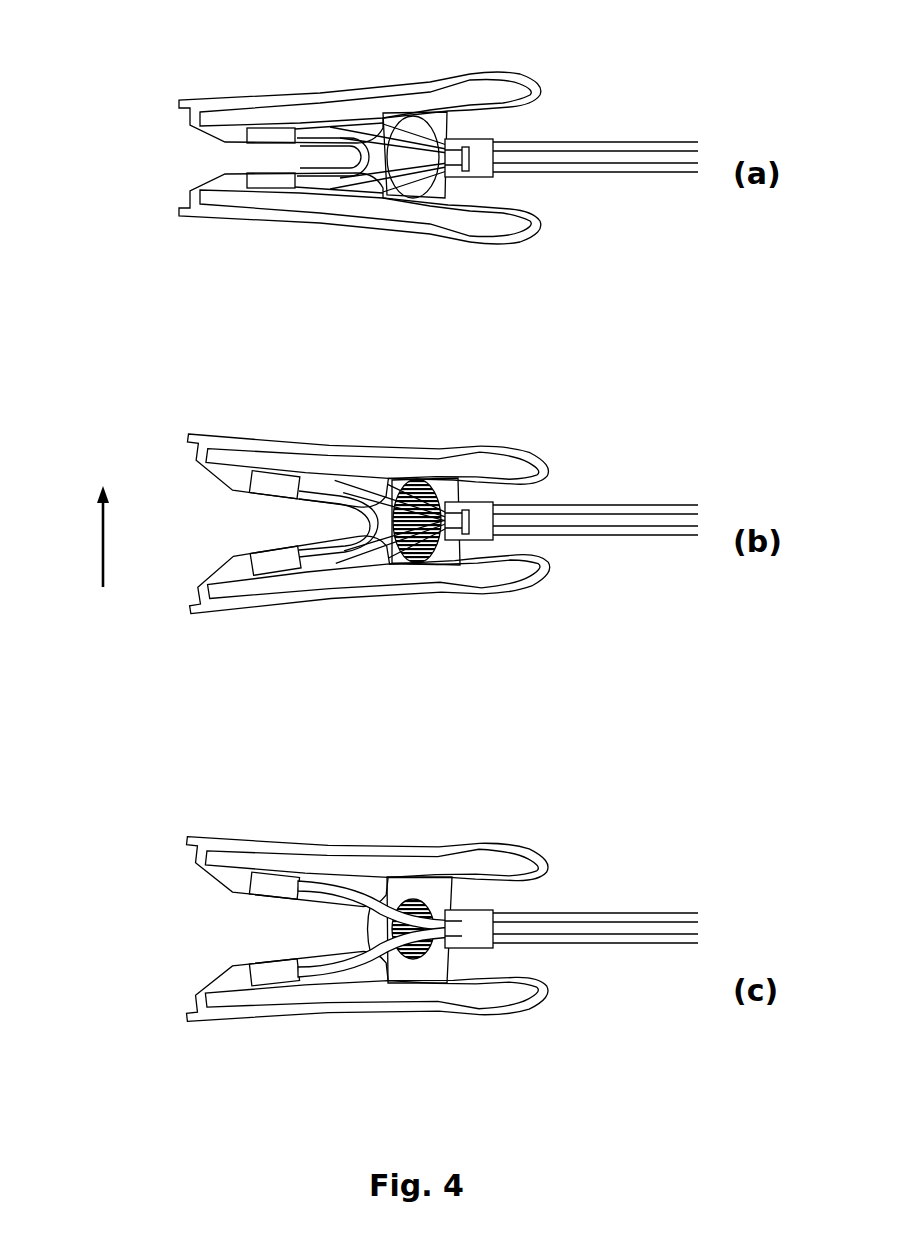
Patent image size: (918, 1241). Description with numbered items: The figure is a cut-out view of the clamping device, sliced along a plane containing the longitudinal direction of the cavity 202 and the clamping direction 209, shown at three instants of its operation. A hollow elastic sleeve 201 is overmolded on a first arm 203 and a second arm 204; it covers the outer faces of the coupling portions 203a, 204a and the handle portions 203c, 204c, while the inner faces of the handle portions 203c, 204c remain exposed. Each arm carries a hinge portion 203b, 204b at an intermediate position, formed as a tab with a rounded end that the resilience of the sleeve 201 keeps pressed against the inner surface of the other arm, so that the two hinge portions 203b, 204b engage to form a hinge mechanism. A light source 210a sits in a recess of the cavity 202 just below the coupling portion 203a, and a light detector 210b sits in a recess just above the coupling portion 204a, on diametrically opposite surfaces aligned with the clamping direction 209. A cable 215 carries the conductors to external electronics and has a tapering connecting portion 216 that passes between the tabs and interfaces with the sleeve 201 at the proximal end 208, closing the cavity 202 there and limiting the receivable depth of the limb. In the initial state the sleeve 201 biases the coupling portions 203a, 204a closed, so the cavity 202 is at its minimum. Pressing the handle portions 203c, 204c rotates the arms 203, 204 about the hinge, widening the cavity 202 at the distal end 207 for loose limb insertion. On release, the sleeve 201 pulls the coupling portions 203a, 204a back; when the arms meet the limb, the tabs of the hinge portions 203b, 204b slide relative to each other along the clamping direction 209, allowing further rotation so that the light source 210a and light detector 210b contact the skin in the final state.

The hollow elastic sleeve 201 is at (197, 608).
The cavity 202 is at (178, 158).
The first arm 203 is at (369, 70).
The coupling portion of the first arm 203a is at (262, 118).
The hinge portion of the first arm 203b is at (443, 123).
The handle portion of the first arm 203c is at (503, 98).
The second arm 204 is at (365, 247).
The coupling portion of the second arm 204a is at (262, 197).
The hinge portion of the second arm 204b is at (440, 193).
The handle portion of the second arm 204c is at (503, 218).
The distal end 207 is at (196, 511).
The proximal end 208 is at (358, 536).
The clamping direction 209 is at (74, 536).
The light source 210a is at (272, 880).
The light detector 210b is at (272, 975).
The cable 215 is at (667, 143).
The connecting portion 216 is at (470, 912).